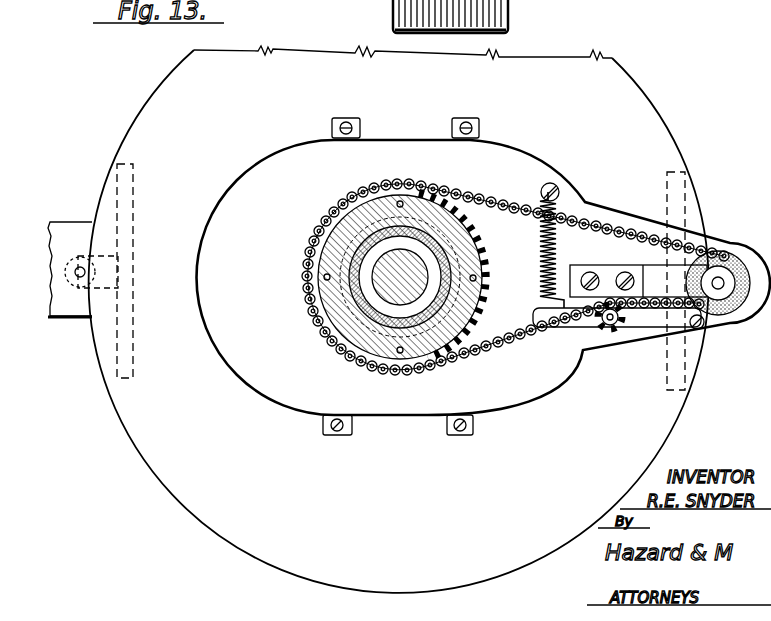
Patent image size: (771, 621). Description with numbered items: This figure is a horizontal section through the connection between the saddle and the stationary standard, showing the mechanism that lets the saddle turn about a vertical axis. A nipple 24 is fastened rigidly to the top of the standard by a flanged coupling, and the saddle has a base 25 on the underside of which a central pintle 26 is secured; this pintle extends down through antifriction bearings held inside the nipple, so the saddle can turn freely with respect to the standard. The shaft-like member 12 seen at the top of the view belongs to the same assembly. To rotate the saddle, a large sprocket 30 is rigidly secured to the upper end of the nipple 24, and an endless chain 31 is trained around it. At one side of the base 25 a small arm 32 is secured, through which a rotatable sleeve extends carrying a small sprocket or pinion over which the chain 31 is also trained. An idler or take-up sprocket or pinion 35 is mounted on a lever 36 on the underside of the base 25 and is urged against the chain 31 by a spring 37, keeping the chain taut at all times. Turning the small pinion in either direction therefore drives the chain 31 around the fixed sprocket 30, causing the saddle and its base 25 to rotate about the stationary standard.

The pintle 12 is at (465, 46).
The nipple 24 is at (347, 352).
The base 25 is at (263, 482).
The pintle 26 is at (363, 366).
The sprocket 30 is at (343, 322).
The endless chain 31 is at (498, 348).
The small arm 32 is at (595, 270).
The idler or take-up sprocket or pinion 35 is at (614, 330).
The lever 36 is at (642, 322).
The spring 37 is at (557, 199).